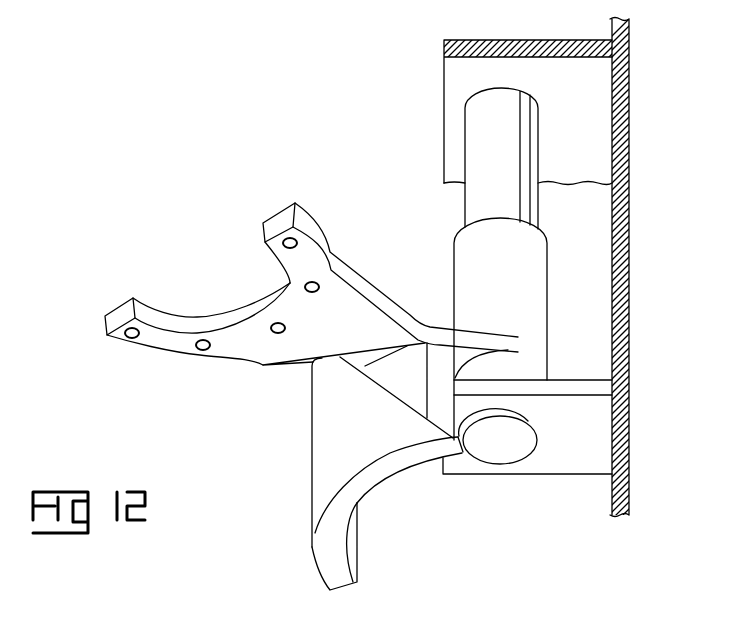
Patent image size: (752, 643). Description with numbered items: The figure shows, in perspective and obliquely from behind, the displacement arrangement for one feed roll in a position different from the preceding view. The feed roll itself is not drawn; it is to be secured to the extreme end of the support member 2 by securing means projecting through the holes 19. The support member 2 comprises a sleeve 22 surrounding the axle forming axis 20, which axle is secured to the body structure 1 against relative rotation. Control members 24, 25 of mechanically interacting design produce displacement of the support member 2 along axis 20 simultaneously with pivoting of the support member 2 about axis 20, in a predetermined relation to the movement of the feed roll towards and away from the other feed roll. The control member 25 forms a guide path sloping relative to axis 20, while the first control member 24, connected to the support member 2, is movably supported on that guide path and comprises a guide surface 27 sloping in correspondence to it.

The body structure 1 is at (630, 80).
The support member 2 is at (257, 340).
The holes 19 is at (305, 286).
The axis (axle) 20 is at (488, 142).
The sleeve 22 is at (454, 272).
The first control member 24 is at (411, 367).
The second control member 25 is at (328, 440).
The guide surface 27 is at (397, 388).